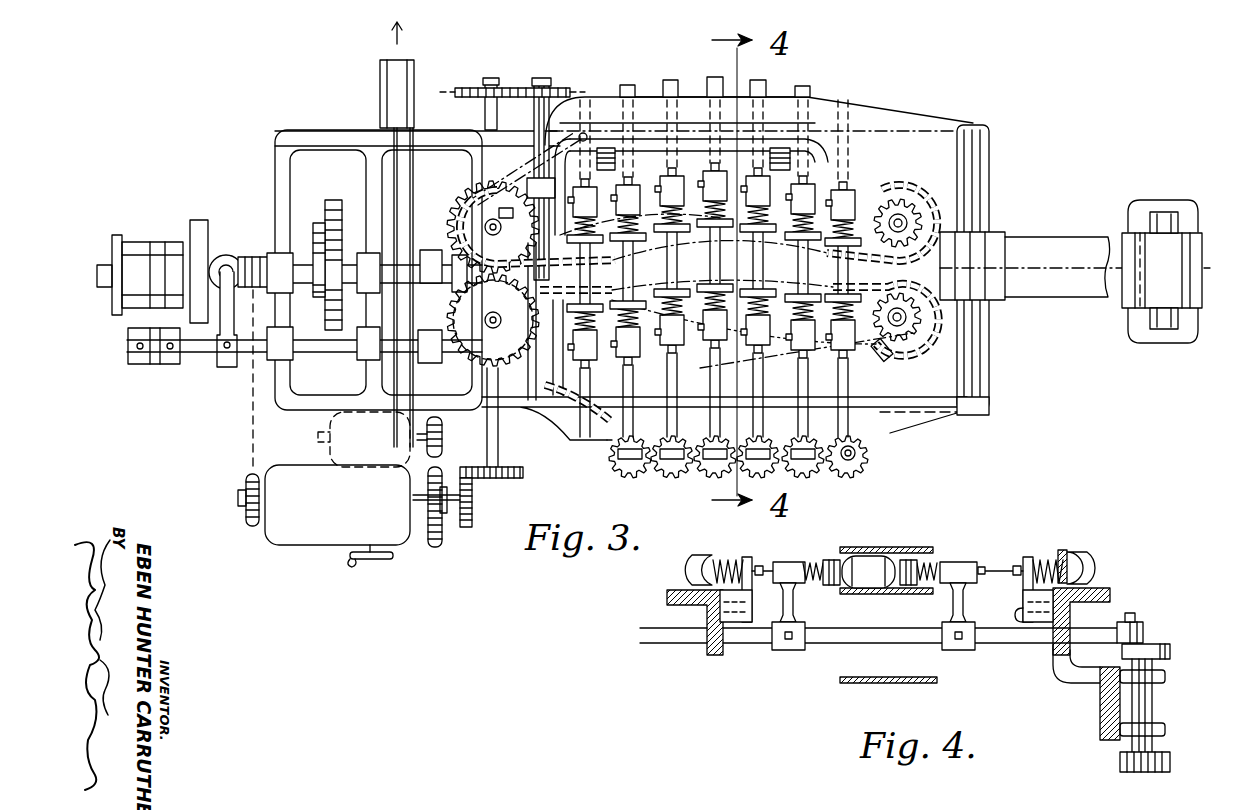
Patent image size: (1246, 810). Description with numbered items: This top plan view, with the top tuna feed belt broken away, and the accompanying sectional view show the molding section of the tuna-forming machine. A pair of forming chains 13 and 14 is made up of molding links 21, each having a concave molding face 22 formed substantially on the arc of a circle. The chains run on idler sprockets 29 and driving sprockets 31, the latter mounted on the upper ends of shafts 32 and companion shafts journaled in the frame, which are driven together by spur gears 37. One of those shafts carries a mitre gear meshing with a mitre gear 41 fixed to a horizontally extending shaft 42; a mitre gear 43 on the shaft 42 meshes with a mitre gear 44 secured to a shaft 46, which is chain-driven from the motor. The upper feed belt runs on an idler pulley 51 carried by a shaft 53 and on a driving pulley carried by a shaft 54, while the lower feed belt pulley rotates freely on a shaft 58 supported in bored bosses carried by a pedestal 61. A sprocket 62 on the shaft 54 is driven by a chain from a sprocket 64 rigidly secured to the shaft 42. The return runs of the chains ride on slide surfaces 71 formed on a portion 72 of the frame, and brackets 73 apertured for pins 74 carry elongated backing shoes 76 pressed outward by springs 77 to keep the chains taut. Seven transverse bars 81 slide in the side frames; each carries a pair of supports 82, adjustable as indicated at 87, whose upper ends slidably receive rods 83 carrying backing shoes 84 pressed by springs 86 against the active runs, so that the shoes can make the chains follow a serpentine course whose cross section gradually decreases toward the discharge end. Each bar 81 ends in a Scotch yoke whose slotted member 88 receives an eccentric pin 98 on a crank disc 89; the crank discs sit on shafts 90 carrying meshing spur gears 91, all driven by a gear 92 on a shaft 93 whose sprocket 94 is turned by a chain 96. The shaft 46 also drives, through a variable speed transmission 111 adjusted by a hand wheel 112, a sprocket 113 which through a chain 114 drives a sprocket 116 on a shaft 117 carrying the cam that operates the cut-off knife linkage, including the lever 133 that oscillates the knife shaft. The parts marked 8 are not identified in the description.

In FIG. 3, the carrier unit 8 is at (710, 268).
In FIG. 3, the forming chain 13 is at (888, 190).
In FIG. 3, the forming chain 14 is at (900, 362).
In FIG. 4, the molding element or link 21 is at (828, 560).
In FIG. 4, the concave molding face 22 is at (860, 562).
In FIG. 3, the idler sprocket 29 is at (914, 336).
In FIG. 3, the driving sprocket 31 is at (510, 205).
In FIG. 3, the shaft 32 is at (922, 214).
In FIG. 3, the spur gear 37 is at (435, 218).
In FIG. 3, the mitre gear 41 is at (466, 352).
In FIG. 3, the horizontally extending shaft 42 is at (498, 442).
In FIG. 3, the mitre gear 43 is at (523, 472).
In FIG. 3, the mitre gear 44 is at (474, 527).
In FIG. 3, the shaft 46 is at (450, 512).
In FIG. 3, the idler pulley 51 is at (993, 235).
In FIG. 3, the shaft 53 is at (980, 182).
In FIG. 3, the shaft 54 is at (545, 150).
In FIG. 3, the shaft 58 is at (1168, 216).
In FIG. 3, the pedestal 61 is at (1196, 335).
In FIG. 3, the sprocket 62 is at (565, 90).
In FIG. 3, the sprocket 64 is at (490, 86).
In FIG. 4, the slide surface 71 is at (680, 578).
In FIG. 4, the frame portion 72 is at (1100, 720).
In FIG. 4, the bracket 73 is at (1018, 608).
In FIG. 4, the pin 74 is at (761, 566).
In FIG. 4, the backing shoe 76 is at (1090, 553).
In FIG. 4, the spring 77 is at (726, 556).
In FIG. 3, the transverse rod or bar 81 is at (810, 97).
In FIG. 4, the support 82 is at (790, 607).
In FIG. 4, the pin or rod 83 is at (984, 566).
In FIG. 4, the backing shoe 84 is at (945, 562).
In FIG. 4, the spring 86 is at (945, 564).
In FIG. 4, the adjustable mounting 87 is at (790, 650).
In FIG. 3, the slotted member 88 is at (758, 470).
In FIG. 4, the crank disc 89 is at (1160, 648).
In FIG. 4, the shaft 90 is at (1150, 698).
In FIG. 4, the spur gear 91 is at (1165, 757).
In FIG. 3, the gear 92 is at (866, 463).
In FIG. 3, the shaft 93 is at (858, 466).
In FIG. 3, the sprocket 94 is at (850, 460).
In FIG. 3, the chain 96 is at (680, 470).
In FIG. 4, the pin 98 is at (1138, 616).
In FIG. 3, the variable speed transmission 111 is at (337, 478).
In FIG. 3, the hand wheel 112 is at (371, 562).
In FIG. 3, the sprocket 113 is at (246, 521).
In FIG. 3, the chain 114 is at (253, 425).
In FIG. 3, the sprocket 116 is at (258, 255).
In FIG. 3, the shaft 117 is at (105, 262).
In FIG. 3, the lever 133 is at (226, 367).